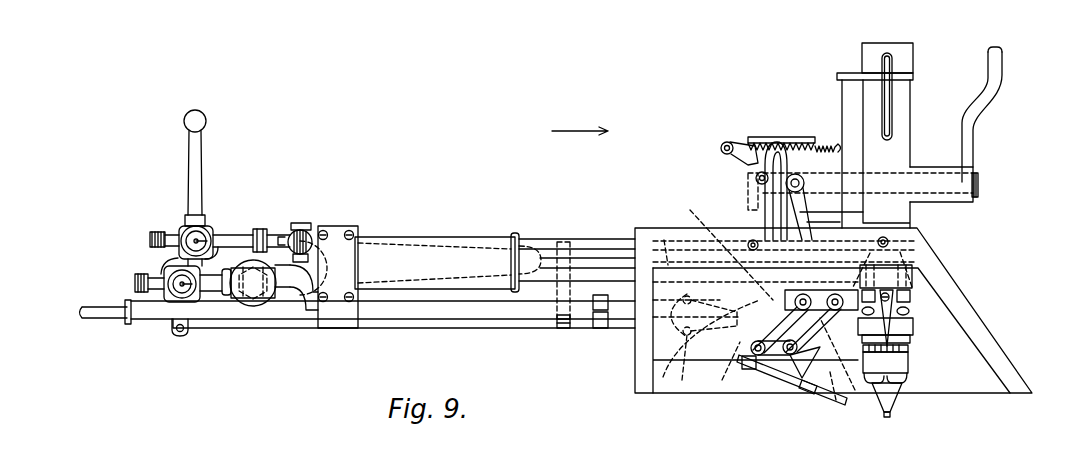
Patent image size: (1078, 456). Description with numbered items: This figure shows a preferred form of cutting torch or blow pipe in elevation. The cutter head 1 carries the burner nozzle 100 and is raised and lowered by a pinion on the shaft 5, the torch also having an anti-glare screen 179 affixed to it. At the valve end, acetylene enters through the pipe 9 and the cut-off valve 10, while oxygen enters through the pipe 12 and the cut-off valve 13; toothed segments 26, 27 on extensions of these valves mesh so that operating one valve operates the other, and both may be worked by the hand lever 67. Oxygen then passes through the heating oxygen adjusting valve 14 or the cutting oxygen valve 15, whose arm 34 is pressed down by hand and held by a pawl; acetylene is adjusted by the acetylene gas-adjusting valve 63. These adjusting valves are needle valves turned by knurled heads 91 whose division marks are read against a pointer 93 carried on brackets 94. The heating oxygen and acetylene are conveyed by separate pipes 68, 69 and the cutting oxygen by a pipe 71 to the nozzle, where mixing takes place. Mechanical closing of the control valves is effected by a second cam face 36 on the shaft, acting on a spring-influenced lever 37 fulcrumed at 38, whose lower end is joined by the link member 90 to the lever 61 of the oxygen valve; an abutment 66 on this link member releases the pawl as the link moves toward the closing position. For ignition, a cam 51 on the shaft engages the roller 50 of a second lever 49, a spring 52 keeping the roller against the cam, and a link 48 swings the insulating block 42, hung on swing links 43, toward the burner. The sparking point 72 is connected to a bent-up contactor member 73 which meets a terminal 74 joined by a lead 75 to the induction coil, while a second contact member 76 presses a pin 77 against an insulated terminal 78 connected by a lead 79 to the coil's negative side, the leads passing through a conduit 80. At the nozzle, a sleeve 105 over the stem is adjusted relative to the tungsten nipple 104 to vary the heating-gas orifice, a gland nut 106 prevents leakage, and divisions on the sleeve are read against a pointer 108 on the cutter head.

The cutter head 1 is at (903, 123).
The pinion shaft 5 is at (979, 184).
The pipe 9 is at (165, 233).
The valve 10 is at (187, 230).
The pipe 12 is at (135, 283).
The valve 13 is at (180, 290).
The heating oxygen adjusting valve 14 is at (337, 226).
The cutting oxygen valve 15 is at (306, 224).
The toothed segment 26 is at (215, 246).
The toothed segment 27 is at (163, 265).
The arm 34 is at (463, 250).
The second cam face 36 is at (798, 141).
The spring-influenced lever 37 is at (864, 213).
The fulcrum 38 is at (763, 230).
The swinging block 42 is at (753, 366).
The swing links 43 is at (792, 355).
The link 48 is at (722, 380).
The second lever 49 is at (749, 200).
The roller 50 is at (757, 167).
The cam 51 is at (757, 142).
The spring 52 is at (823, 145).
The lever 61 is at (180, 337).
The acetylene gas-adjusting valve 63 is at (273, 306).
The abutment 66 is at (560, 287).
The hand lever 67 is at (194, 178).
The pipe 68 is at (613, 262).
The pipe 69 is at (562, 329).
The pipe 71 is at (580, 245).
The sparking point 72 is at (836, 397).
The bent-up contactor member 73 is at (682, 380).
The terminal 74 is at (751, 360).
The lead 75 is at (684, 340).
The second contact member 76 is at (690, 210).
The pin 77 is at (855, 390).
The insulated terminal 78 is at (836, 400).
The lead 79 is at (664, 240).
The conduit 80 is at (140, 312).
The link member 90 is at (420, 329).
The knurled head 91 is at (276, 302).
The pointer 93 is at (299, 229).
The bracket 94 is at (337, 227).
The burner nozzle 100 is at (892, 386).
The nipple 104 is at (891, 416).
The sleeve 105 is at (912, 358).
The gland nut 106 is at (909, 337).
The pointer 108 is at (889, 328).
The anti-glare screen 179 is at (983, 368).